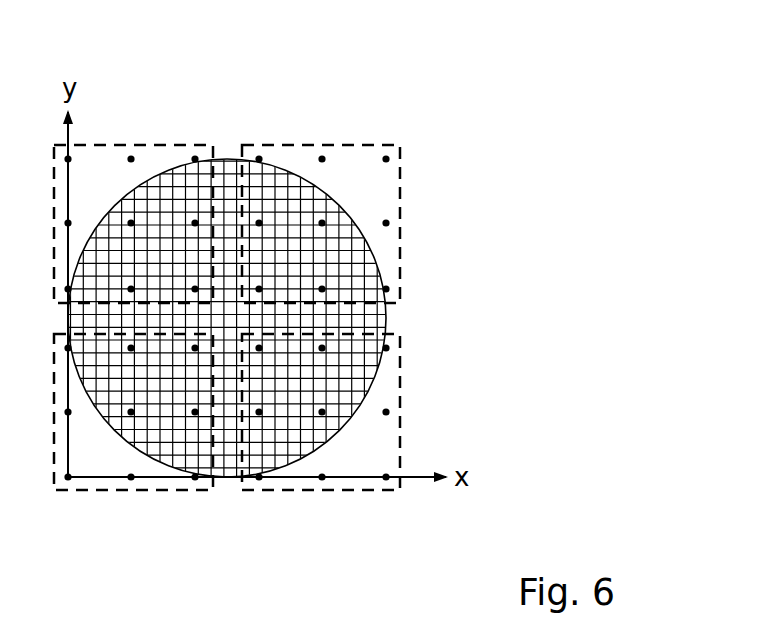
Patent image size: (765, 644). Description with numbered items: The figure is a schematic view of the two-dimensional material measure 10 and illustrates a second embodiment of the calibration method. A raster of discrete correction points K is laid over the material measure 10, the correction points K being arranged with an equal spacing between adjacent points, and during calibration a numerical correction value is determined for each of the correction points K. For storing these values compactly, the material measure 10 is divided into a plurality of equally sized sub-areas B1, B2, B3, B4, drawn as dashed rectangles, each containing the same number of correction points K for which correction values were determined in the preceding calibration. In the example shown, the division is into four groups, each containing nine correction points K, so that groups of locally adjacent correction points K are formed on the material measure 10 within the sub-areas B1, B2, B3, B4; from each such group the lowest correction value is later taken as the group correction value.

The material measure 10 is at (348, 268).
The correction points K is at (321, 147).
The sub-area B1 is at (97, 142).
The sub-area B2 is at (365, 145).
The sub-area B3 is at (400, 398).
The sub-area B4 is at (142, 489).